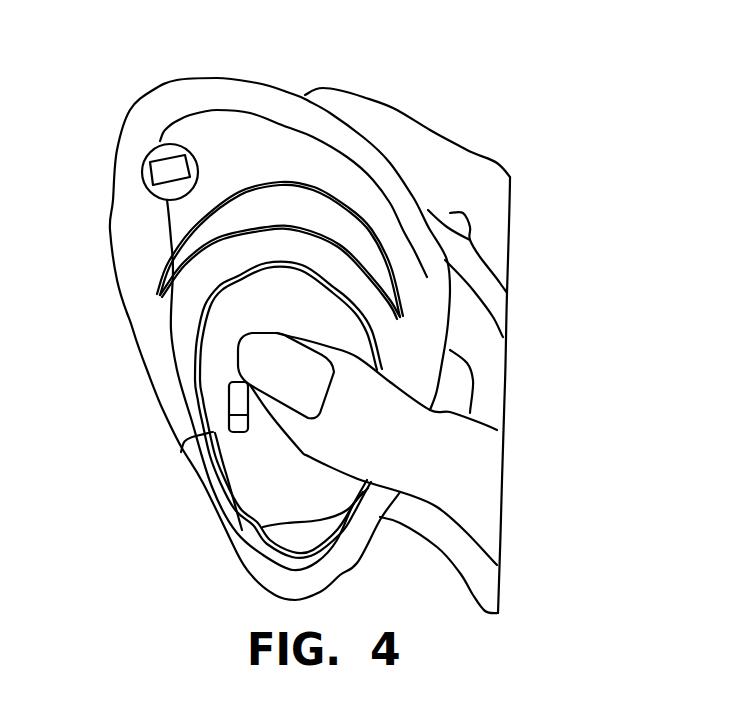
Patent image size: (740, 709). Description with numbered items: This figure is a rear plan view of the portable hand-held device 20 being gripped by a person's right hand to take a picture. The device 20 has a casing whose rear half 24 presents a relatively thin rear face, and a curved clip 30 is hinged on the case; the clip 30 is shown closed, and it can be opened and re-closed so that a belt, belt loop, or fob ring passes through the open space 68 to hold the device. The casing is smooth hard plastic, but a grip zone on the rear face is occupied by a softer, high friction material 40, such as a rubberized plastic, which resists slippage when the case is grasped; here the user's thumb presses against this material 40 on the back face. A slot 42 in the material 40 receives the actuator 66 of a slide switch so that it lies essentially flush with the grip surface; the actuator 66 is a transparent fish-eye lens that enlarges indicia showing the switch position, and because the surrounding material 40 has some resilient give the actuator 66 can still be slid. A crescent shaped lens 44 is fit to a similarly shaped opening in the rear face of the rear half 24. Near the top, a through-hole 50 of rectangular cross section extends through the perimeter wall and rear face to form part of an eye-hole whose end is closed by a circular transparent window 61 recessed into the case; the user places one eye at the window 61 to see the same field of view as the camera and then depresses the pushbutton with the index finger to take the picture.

The portable hand-held device 20 is at (258, 64).
The rear half 24 is at (263, 107).
The curved clip 30 is at (260, 563).
The high friction material 40 is at (240, 320).
The slot 42 is at (240, 432).
The crescent shaped lens 44 is at (207, 232).
The through-hole 50 is at (163, 170).
The transparent window 61 is at (147, 187).
The actuator 66 is at (237, 395).
The open space 68 is at (300, 540).